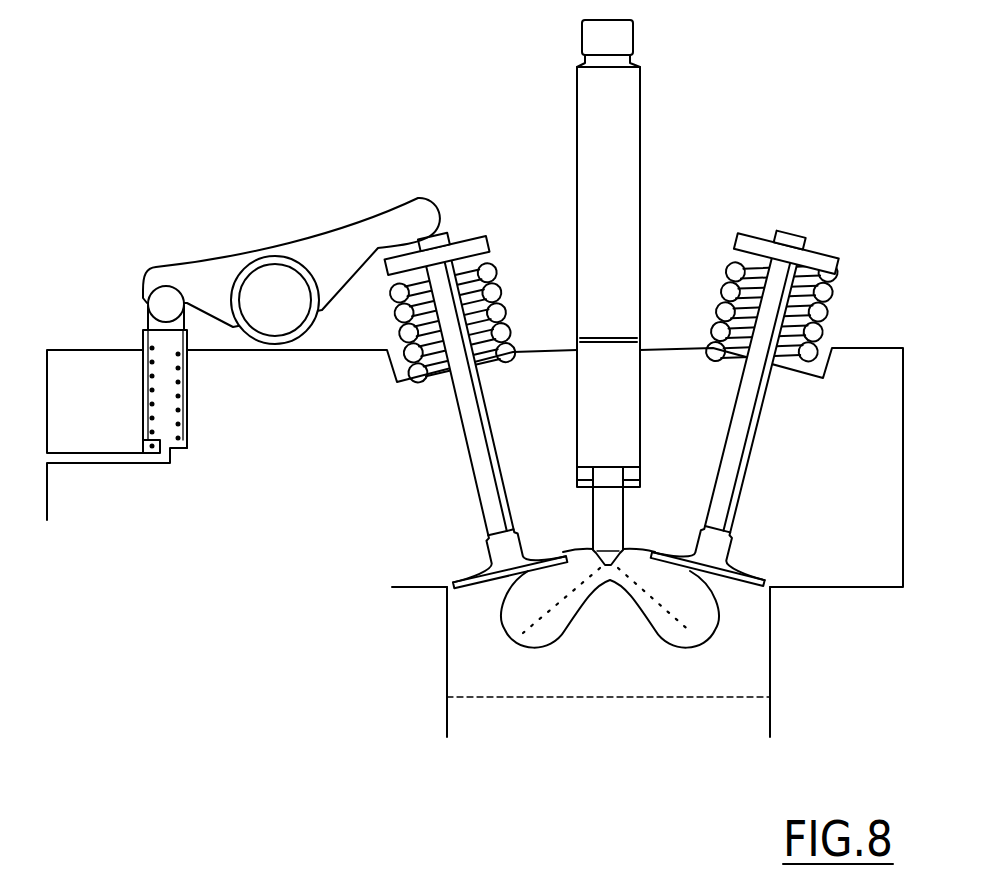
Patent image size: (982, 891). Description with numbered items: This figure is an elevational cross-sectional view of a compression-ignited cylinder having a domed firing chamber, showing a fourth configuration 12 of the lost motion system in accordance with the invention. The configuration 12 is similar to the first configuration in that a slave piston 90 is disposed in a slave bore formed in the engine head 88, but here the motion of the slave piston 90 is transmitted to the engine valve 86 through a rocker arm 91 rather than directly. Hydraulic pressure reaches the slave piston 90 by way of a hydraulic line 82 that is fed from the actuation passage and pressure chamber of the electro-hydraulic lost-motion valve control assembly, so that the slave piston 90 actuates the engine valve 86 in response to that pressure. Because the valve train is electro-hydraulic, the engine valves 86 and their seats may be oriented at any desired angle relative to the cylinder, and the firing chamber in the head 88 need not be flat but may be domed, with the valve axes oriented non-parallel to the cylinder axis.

The fourth configuration 12 is at (343, 55).
The hydraulic line 82 is at (78, 465).
The engine valve 86 is at (433, 243).
The engine head 88 is at (258, 432).
The slave piston 90 is at (141, 333).
The rocker arm 91 is at (312, 257).